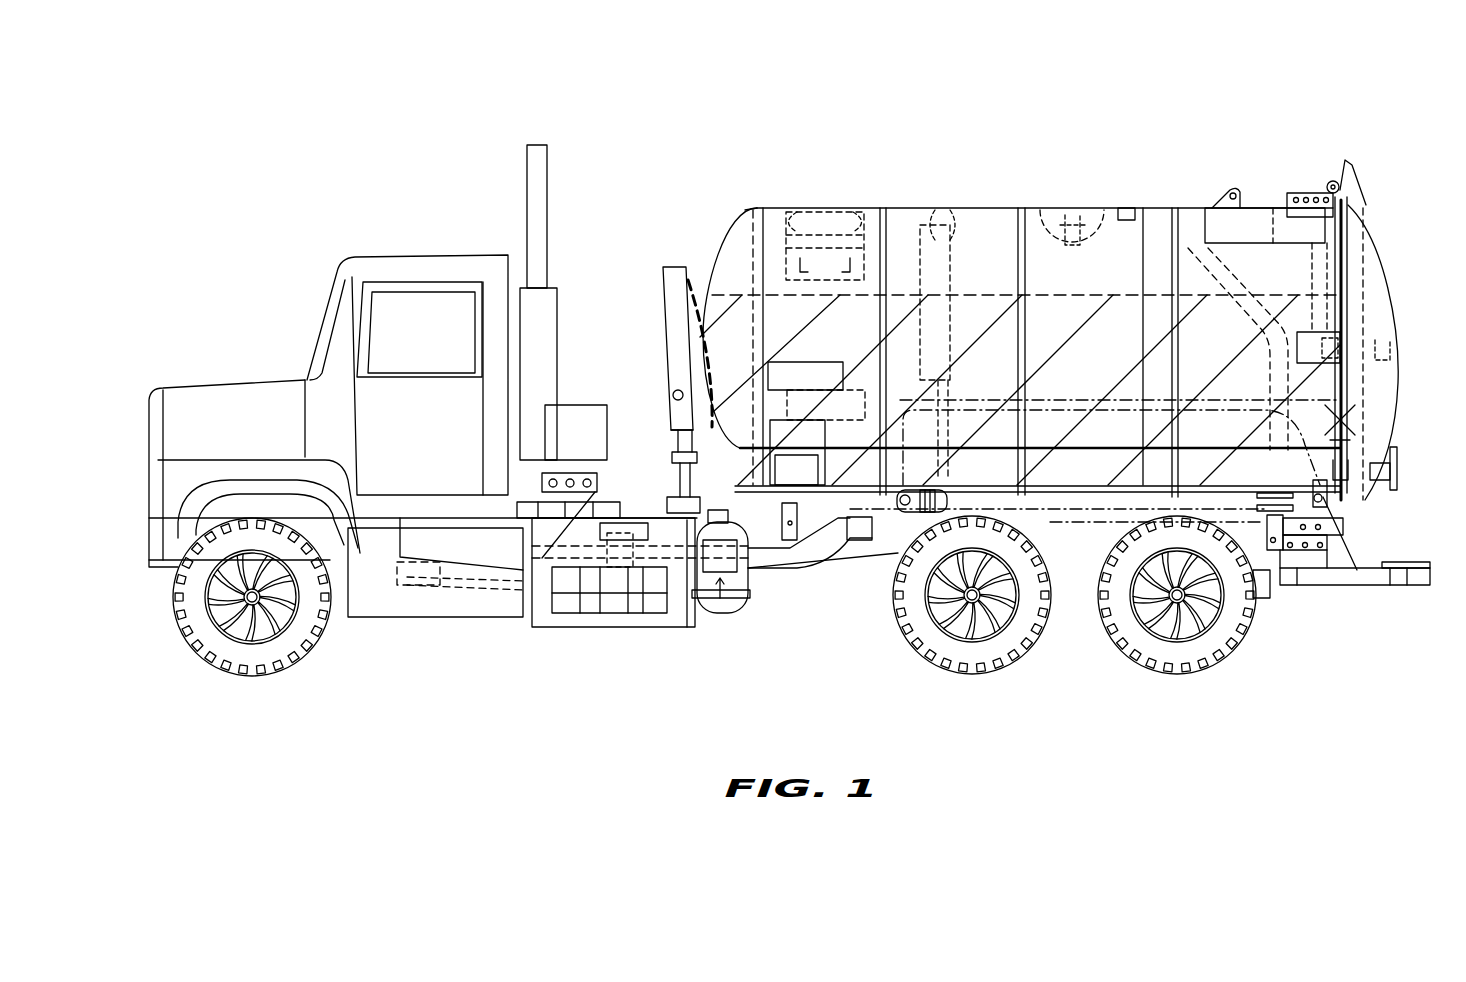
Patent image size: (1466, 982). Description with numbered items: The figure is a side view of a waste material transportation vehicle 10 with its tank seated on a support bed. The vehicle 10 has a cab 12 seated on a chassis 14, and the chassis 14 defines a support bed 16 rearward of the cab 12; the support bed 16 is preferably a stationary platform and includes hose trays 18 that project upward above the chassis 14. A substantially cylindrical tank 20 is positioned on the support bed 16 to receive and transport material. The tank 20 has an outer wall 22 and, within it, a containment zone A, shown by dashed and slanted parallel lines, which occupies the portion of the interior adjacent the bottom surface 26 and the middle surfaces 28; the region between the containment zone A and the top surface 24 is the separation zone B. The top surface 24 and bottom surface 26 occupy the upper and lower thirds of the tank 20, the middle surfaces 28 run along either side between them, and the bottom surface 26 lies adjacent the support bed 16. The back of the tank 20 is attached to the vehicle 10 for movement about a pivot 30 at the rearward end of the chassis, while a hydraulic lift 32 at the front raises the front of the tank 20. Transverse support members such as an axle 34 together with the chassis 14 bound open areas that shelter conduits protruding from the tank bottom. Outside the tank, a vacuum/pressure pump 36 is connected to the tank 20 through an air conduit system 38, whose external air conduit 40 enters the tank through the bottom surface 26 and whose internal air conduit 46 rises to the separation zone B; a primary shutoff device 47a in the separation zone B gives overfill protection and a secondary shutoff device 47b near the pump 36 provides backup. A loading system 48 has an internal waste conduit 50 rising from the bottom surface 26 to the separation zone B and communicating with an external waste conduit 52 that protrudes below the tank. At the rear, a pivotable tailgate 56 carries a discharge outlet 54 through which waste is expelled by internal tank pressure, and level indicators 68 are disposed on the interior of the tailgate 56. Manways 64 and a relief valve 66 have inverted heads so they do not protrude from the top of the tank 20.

The vehicle 10 is at (578, 131).
The cab 12 is at (372, 257).
The chassis 14 is at (842, 548).
The support bed 16 is at (712, 482).
The hose trays 18 is at (1075, 473).
The tank 20 is at (716, 312).
The outer wall 22 is at (742, 210).
The top surface 24 is at (1252, 207).
The bottom surface 26 is at (745, 505).
The middle surfaces 28 is at (1363, 295).
The pivot 30 is at (1330, 497).
The hydraulic lift 32 is at (672, 394).
The axle 34 is at (898, 488).
The vacuum/pressure pump 36 is at (682, 627).
The air conduit system 38 is at (1308, 419).
The external air conduit 40 is at (1347, 427).
The internal air conduit 46 is at (945, 376).
The primary shutoff device 47a is at (960, 248).
The secondary shutoff device 47b is at (723, 613).
The loading system 48 is at (1263, 290).
The internal waste conduit 50 is at (1188, 247).
The external waste conduit 52 is at (1330, 530).
The discharge outlet 54 is at (1398, 470).
The tailgate 56 is at (1400, 370).
The manways 64 is at (848, 208).
The relief valve 66 is at (1088, 207).
The level indicators 68 is at (1340, 335).
The containment zone A is at (700, 282).
The separation zone B is at (989, 249).